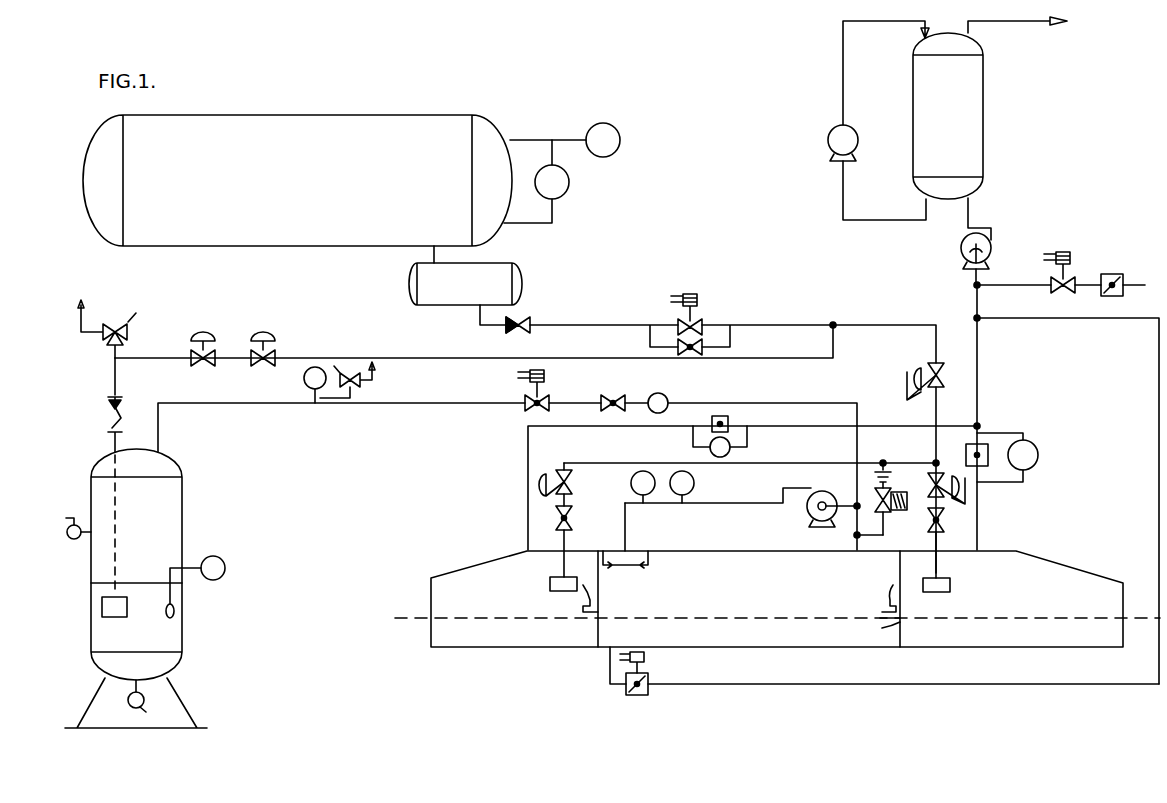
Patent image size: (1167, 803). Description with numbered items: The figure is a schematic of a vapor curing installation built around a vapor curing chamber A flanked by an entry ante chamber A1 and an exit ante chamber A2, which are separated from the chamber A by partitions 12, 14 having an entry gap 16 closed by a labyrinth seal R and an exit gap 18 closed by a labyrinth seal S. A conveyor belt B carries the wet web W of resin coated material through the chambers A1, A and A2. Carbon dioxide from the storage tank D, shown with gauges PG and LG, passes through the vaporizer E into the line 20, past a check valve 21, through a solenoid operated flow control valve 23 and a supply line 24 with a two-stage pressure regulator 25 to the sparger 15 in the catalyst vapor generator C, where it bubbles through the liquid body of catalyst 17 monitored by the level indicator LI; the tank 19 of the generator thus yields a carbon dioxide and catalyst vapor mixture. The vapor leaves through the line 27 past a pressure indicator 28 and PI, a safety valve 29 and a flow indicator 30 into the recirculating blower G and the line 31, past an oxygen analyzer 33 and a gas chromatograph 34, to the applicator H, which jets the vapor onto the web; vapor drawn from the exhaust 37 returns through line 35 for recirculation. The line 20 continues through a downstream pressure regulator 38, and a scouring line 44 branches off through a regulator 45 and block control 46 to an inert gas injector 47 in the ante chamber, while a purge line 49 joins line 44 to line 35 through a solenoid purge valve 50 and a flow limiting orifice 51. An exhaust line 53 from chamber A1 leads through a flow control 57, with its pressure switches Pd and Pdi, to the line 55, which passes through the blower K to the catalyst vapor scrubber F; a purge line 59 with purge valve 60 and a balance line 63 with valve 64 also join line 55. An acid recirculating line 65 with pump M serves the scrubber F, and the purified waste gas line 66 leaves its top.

The partition 12 is at (592, 630).
The partition 14 is at (892, 632).
The sparger 15 is at (101, 607).
The entry gap 16 is at (598, 614).
The liquid body of catalyst 17 is at (158, 630).
The exit gap 18 is at (900, 624).
The solvent tank 19 is at (165, 522).
The line 20 is at (740, 325).
The check valve 21 is at (524, 319).
The solenoid operated flow control valve 23 is at (708, 347).
The supply line 24 is at (540, 362).
The two-stage pressure regulator 25 is at (261, 336).
The line 27 is at (158, 447).
The pressure indicator 28 is at (362, 396).
The safety valve 29 is at (532, 410).
The flow indicator 30 is at (617, 399).
The line 31 is at (750, 504).
The oxygen analyzer 33 is at (695, 483).
The gas chromatograph 34 is at (643, 471).
The line 35 is at (857, 535).
The exhaust 37 is at (857, 572).
The downstream pressure regulator 38 is at (940, 365).
The scouring line 44 is at (772, 466).
The regulator 45 is at (576, 480).
The block control 46 is at (576, 518).
The inert gas injector 47 is at (555, 593).
The purge line 49 is at (857, 552).
The solenoid purge valve 50 is at (929, 522).
The flow limiting orifice 51 is at (883, 461).
The exhaust line 53 is at (583, 428).
The line 55 is at (980, 380).
The flow control 57 is at (1002, 486).
The purge line 59 is at (800, 688).
The purge valve 60 is at (636, 697).
The balance line 63 is at (1012, 285).
The shut-off valve 64 is at (1105, 275).
The acid recirculating line 65 is at (862, 222).
The purified waste gas line 66 is at (1008, 22).
The carbon dioxide storage tank D is at (388, 132).
The vaporizer E is at (428, 296).
The catalyst vapor scrubber F is at (988, 148).
The recirculating blower G is at (829, 497).
The applicator H is at (636, 558).
The blower K is at (962, 262).
The pump M is at (828, 145).
The catalyst vapor generator C is at (187, 602).
The labyrinth seal R is at (586, 592).
The labyrinth seal S is at (888, 587).
The wet web W is at (500, 612).
The vapor curing chamber A is at (722, 647).
The entry ante chamber A1 is at (468, 647).
The exit ante chamber A2 is at (1088, 647).
The conveyor belt B is at (655, 618).
The pressure gauge PG is at (565, 140).
The level gauge LG is at (536, 181).
The pressure indicator PI is at (315, 384).
The pressure switch Pd is at (1023, 455).
The differential pressure indicator Pdi is at (720, 436).
The level indicator LI is at (195, 587).